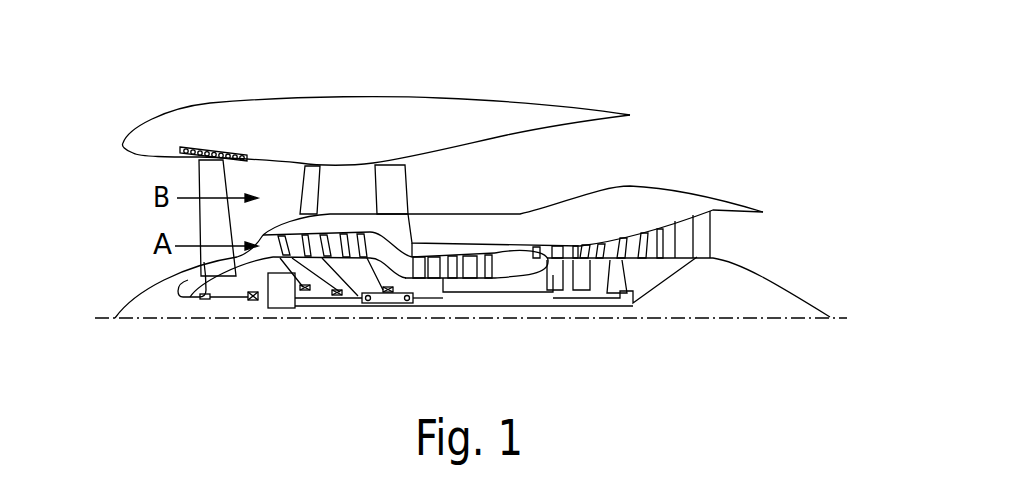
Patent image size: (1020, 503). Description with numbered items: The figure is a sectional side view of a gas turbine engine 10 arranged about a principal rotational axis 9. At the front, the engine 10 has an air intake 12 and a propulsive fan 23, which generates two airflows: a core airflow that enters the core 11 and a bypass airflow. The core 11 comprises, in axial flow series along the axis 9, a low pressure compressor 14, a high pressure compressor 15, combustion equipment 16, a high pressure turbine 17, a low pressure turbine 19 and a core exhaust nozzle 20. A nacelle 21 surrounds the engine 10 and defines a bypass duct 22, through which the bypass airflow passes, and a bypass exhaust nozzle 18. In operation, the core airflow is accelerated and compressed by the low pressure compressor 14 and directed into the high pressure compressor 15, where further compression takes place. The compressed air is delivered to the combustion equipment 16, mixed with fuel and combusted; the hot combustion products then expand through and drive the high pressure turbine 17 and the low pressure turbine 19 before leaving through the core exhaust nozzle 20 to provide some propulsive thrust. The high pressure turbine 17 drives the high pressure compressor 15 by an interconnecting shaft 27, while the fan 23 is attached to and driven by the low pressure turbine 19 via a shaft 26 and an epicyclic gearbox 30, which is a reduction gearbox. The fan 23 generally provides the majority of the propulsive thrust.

The principal rotational axis 9 is at (733, 320).
The gas turbine engine 10 is at (175, 112).
The core 11 is at (533, 228).
The air intake 12 is at (126, 170).
The low pressure compressor 14 is at (340, 243).
The high pressure compressor 15 is at (461, 263).
The combustion equipment 16 is at (522, 268).
The high pressure turbine 17 is at (577, 245).
The bypass exhaust nozzle 18 is at (723, 113).
The low pressure turbine 19 is at (688, 253).
The core exhaust nozzle 20 is at (775, 245).
The nacelle 21 is at (387, 112).
The bypass duct 22 is at (608, 150).
The propulsive fan 23 is at (203, 232).
The shaft 26 is at (430, 305).
The interconnecting shaft 27 is at (487, 297).
The epicyclic gearbox 30 is at (283, 298).